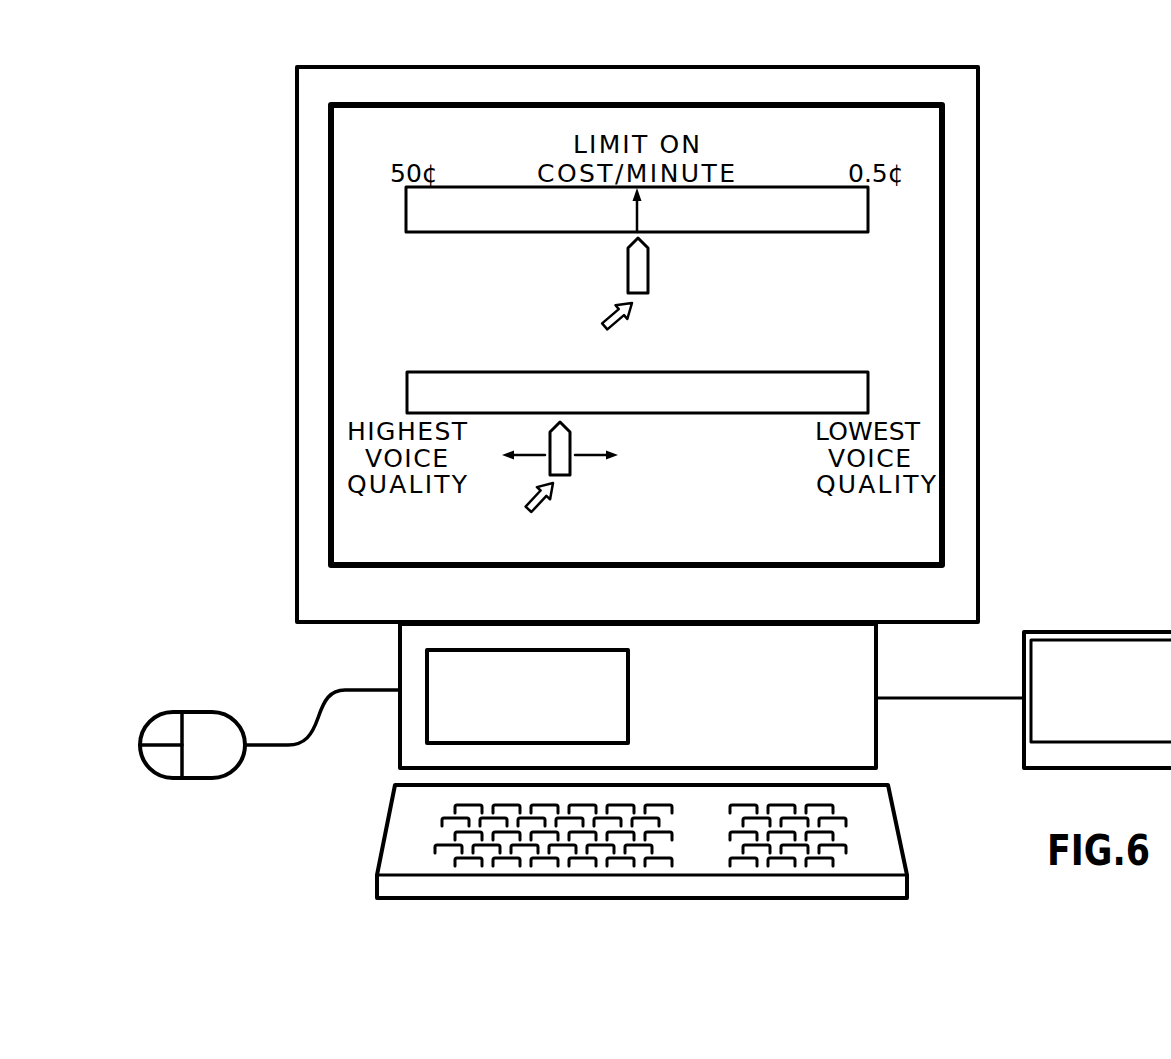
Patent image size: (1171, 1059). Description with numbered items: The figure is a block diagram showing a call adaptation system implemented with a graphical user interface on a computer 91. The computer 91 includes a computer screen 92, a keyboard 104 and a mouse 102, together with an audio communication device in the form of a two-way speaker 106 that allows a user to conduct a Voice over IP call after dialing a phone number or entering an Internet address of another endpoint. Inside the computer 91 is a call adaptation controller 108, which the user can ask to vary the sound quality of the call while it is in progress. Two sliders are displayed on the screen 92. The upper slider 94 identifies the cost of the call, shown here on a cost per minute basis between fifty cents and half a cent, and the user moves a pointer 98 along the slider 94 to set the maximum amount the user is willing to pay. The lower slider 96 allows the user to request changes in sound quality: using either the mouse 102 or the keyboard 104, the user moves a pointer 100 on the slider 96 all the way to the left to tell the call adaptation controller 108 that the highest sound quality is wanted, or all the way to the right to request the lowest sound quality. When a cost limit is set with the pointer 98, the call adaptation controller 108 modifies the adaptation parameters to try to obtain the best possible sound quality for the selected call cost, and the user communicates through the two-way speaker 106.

The computer 91 is at (1040, 54).
The computer screen 92 is at (980, 134).
The slider 94 is at (813, 235).
The slider 96 is at (740, 370).
The pointer 98 is at (610, 300).
The pointer 100 is at (553, 483).
The mouse 102 is at (213, 710).
The keyboard 104 is at (905, 845).
The two-way speaker 106 is at (1145, 630).
The call adaptation controller 108 is at (632, 690).